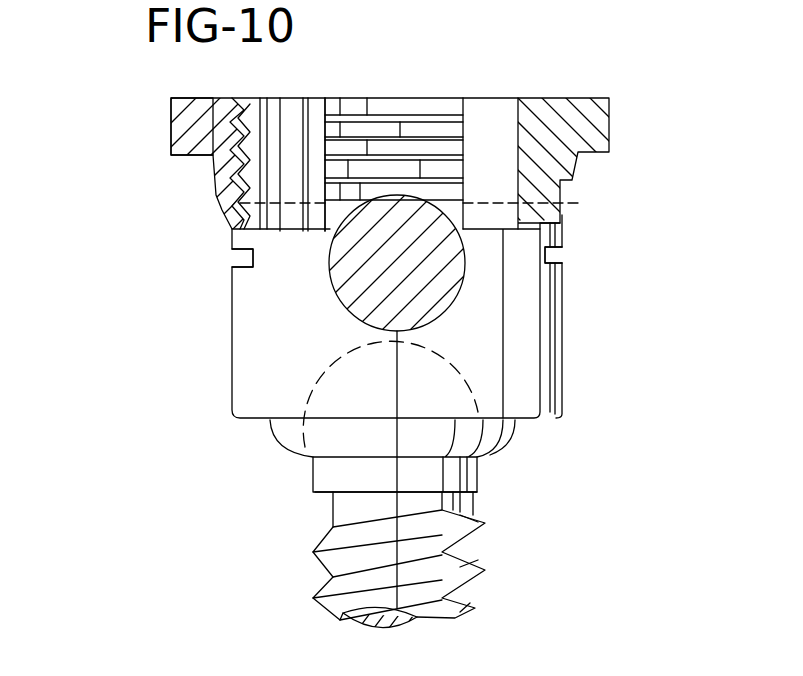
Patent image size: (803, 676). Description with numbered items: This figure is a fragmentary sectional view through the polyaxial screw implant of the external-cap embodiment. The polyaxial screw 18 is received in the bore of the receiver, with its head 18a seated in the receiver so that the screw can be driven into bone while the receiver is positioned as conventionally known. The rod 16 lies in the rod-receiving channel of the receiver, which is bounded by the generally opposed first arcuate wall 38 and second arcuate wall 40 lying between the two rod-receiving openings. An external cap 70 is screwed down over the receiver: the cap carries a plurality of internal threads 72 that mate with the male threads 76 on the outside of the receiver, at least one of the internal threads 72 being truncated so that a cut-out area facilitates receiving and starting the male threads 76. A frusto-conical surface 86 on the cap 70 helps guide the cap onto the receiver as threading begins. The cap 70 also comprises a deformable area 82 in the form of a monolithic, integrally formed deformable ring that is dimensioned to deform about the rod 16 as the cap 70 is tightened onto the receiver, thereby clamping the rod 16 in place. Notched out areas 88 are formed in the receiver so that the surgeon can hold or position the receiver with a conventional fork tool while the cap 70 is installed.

The external cap 70 is at (164, 123).
The second arcuate wall 40 is at (247, 98).
The frusto-conical surface 86 is at (226, 187).
The male threads 76 is at (584, 122).
The internal threads 72 is at (388, 163).
The first arcuate wall 38 is at (532, 98).
The deformable area 82 is at (556, 196).
The notched out areas 88 is at (236, 258).
The rod 16 is at (342, 291).
The head 18a is at (345, 350).
The polyaxial screw 18 is at (342, 510).